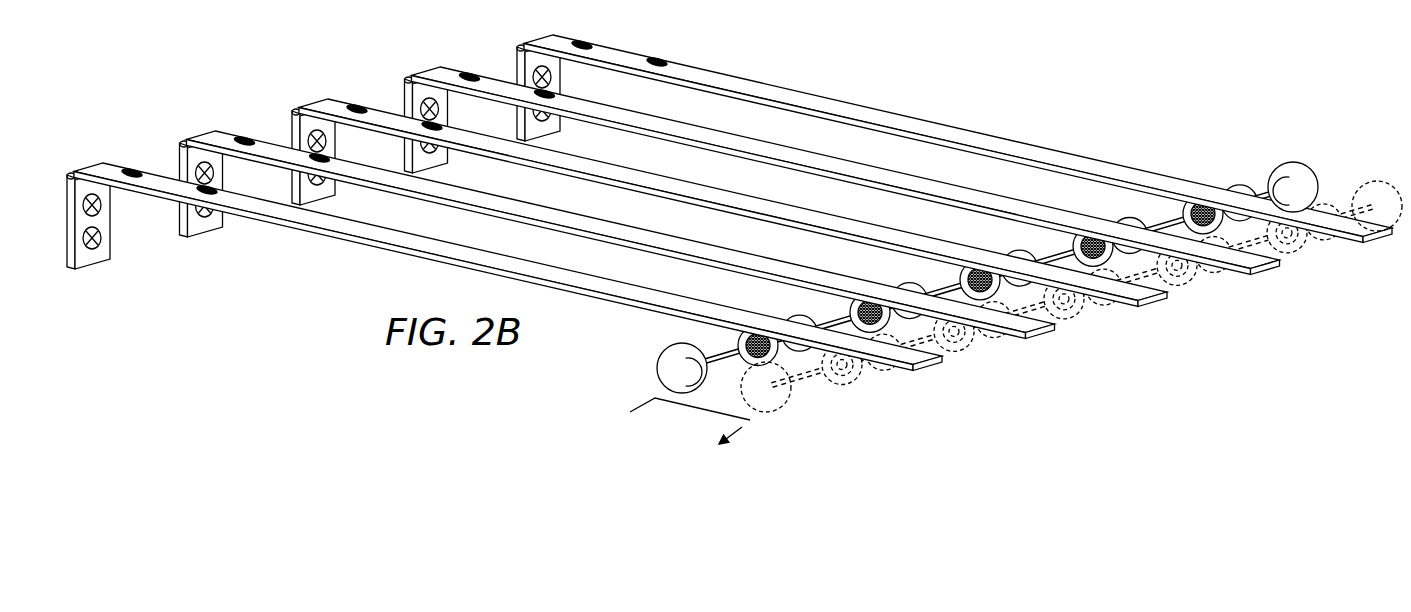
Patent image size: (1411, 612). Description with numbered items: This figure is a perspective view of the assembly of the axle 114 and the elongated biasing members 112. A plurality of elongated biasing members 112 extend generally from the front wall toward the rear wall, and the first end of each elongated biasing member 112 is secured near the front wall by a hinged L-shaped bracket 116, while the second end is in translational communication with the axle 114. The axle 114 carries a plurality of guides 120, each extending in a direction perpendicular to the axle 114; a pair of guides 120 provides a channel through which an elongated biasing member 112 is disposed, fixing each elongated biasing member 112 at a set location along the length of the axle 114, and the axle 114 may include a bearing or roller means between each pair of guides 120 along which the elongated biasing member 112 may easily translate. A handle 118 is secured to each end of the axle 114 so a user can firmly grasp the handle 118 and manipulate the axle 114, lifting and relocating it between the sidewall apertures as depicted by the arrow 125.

The elongated biasing member 112 is at (893, 115).
The axle 114 is at (1298, 175).
The hinged L-shaped bracket 116 is at (403, 88).
The handle 118 is at (1285, 163).
The guide 120 is at (1247, 180).
The arrow 125 is at (700, 415).